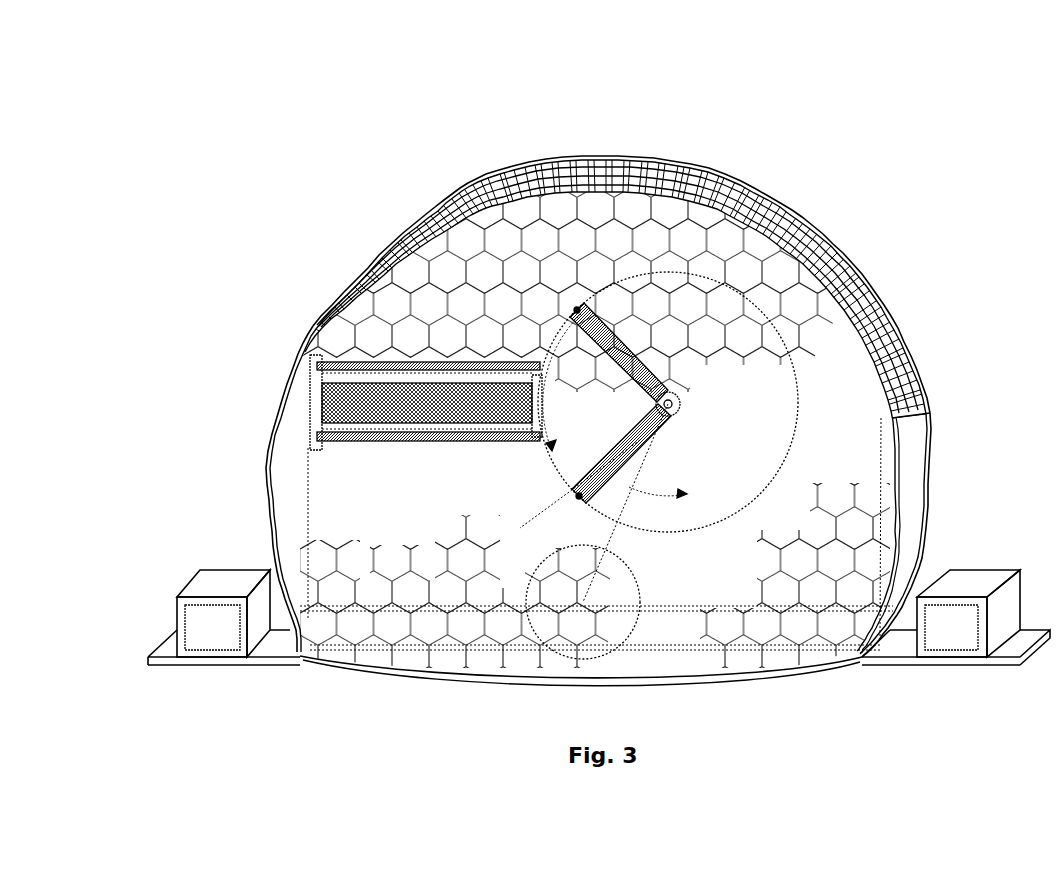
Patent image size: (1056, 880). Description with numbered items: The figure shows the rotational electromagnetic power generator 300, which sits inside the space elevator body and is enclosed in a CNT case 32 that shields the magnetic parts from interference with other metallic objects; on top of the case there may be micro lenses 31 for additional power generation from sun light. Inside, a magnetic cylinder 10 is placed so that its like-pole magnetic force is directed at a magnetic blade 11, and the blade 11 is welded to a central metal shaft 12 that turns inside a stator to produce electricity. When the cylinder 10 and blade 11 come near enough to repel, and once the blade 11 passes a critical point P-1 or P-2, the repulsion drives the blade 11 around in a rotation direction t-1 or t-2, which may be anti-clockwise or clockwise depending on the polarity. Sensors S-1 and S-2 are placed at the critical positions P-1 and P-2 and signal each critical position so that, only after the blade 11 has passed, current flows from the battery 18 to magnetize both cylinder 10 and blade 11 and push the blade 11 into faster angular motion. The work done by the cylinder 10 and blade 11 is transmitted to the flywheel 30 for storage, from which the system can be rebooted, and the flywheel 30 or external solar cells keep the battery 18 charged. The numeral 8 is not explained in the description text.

The power generator 300 is at (815, 138).
The micro lenses 31 is at (847, 237).
The CNT case 32 is at (938, 462).
The magnetic cylinder 10 is at (497, 362).
The magnetic blade 11 is at (661, 392).
The metal shaft 12 is at (645, 355).
The flywheel 30 is at (202, 660).
The battery 18 is at (963, 660).
The block interior 8 is at (951, 627).
The first sensor S-1 is at (668, 401).
The second sensor S-2 is at (594, 531).
The first critical point P-1 is at (565, 301).
The second critical point P-2 is at (568, 502).
The first rotation direction t-1 is at (568, 382).
The second rotation direction t-2 is at (658, 489).